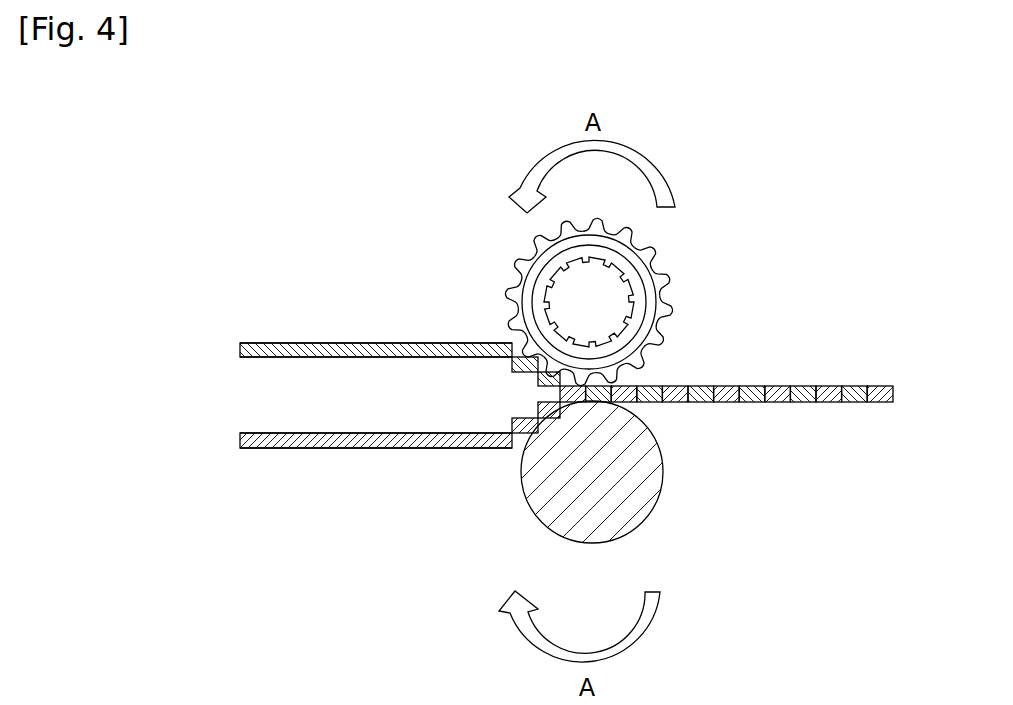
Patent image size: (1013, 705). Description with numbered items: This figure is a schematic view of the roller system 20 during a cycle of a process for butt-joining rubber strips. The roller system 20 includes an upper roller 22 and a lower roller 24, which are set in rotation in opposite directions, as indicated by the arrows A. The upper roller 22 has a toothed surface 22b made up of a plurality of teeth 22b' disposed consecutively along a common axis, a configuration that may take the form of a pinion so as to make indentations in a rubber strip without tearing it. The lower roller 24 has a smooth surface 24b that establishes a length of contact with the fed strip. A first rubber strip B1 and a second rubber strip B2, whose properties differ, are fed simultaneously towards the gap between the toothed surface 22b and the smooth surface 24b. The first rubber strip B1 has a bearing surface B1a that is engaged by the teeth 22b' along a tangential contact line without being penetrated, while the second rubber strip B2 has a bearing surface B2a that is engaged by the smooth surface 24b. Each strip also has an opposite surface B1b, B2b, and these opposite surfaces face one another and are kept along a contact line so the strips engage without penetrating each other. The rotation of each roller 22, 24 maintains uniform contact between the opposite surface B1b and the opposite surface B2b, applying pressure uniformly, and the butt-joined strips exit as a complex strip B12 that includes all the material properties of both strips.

The roller system 20 is at (690, 200).
The upper roller 22 is at (510, 237).
The toothed surface 22b is at (520, 302).
The teeth 22b' is at (644, 302).
The lower roller 24 is at (677, 512).
The smooth surface 24b is at (523, 495).
The first rubber strip B1 is at (280, 318).
The bearing surface B1a is at (372, 340).
The opposite surface B1b is at (263, 357).
The second rubber strip B2 is at (280, 470).
The bearing surface B2a is at (368, 450).
The opposite surface B2b is at (263, 433).
The complex strip B12 is at (843, 387).